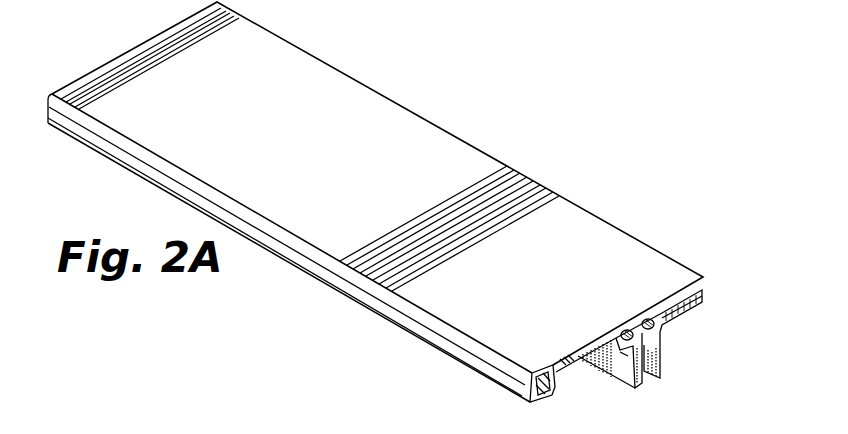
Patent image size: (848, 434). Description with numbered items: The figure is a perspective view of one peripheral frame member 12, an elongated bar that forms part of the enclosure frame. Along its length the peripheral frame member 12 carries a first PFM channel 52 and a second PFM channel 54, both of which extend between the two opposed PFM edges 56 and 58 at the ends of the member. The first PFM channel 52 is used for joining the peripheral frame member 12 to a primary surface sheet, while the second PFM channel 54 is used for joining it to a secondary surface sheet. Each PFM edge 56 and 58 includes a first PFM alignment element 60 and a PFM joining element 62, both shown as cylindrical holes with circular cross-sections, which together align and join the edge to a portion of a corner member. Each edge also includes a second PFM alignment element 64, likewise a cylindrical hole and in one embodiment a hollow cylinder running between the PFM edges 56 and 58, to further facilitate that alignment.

The peripheral frame member 12 is at (515, 153).
The first PFM channel 52 is at (648, 381).
The second PFM channel 54 is at (702, 292).
The PFM edge 56 is at (570, 364).
The PFM edge 58 is at (166, 30).
The first PFM alignment element 60 is at (624, 356).
The PFM joining element 62 is at (657, 331).
The second PFM alignment element 64 is at (43, 90).